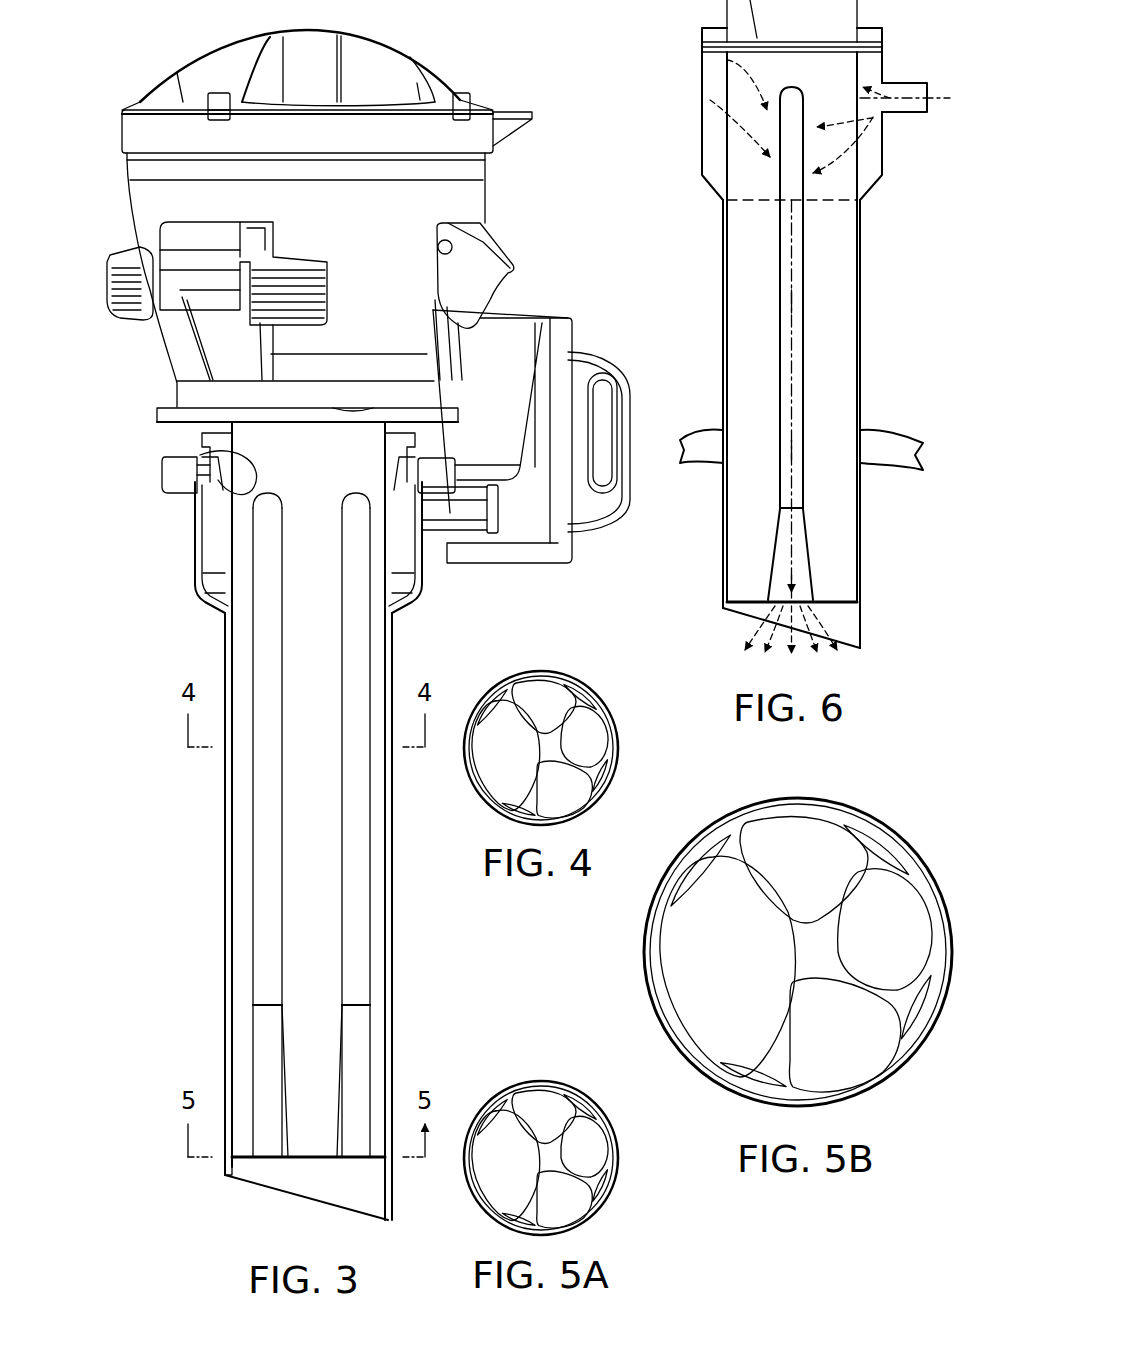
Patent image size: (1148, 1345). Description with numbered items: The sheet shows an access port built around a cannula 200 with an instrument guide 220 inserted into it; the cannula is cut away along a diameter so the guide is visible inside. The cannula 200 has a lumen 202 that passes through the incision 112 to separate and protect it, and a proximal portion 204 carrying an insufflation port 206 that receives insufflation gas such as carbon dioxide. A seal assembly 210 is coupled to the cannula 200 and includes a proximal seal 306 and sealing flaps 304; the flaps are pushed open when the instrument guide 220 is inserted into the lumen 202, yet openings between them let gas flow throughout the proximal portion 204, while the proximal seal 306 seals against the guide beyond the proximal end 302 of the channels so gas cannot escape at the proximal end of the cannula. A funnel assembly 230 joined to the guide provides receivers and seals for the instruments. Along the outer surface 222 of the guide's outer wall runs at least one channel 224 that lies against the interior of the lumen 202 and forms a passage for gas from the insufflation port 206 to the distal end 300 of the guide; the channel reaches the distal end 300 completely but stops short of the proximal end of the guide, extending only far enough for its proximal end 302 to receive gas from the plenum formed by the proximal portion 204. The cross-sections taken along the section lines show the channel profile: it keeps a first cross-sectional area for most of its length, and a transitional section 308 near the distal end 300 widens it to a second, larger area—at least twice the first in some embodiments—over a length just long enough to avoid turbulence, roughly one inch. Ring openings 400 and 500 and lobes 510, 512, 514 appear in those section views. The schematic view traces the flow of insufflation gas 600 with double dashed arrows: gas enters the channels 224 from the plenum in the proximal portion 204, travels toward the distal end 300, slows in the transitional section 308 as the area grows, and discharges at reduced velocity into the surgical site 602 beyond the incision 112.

In FIG. 6, the incision 112 is at (860, 430).
In FIG. 3, the cannula 200 is at (170, 777).
In FIG. 6, the cannula 200 is at (660, 270).
In FIG. 3, the lumen 202 is at (225, 792).
In FIG. 6, the lumen 202 is at (722, 284).
In FIG. 3, the proximal portion 204 is at (193, 548).
In FIG. 6, the proximal portion 204 is at (702, 103).
In FIG. 3, the insufflation port 206 is at (462, 531).
In FIG. 6, the insufflation port 206 is at (893, 82).
In FIG. 3, the seal assembly 210 is at (177, 502).
In FIG. 3, the instrument guide 220 is at (663, 352).
In FIG. 6, the instrument guide 220 is at (750, 395).
In FIG. 3, the outer surface 222 is at (232, 830).
In FIG. 4, the outer surface 222 is at (566, 673).
In FIG. 5A, the outer surface 222 is at (587, 1220).
In FIG. 5B, the outer surface 222 is at (867, 1090).
In FIG. 6, the outer surface 222 is at (727, 345).
In FIG. 3, the channel 224 is at (253, 883).
In FIG. 6, the channel 224 is at (803, 342).
In FIG. 3, the funnel assembly 230 is at (128, 198).
In FIG. 3, the distal end 300 is at (266, 1155).
In FIG. 6, the distal end 300 is at (783, 598).
In FIG. 3, the proximal end 302 is at (266, 505).
In FIG. 6, the proximal end 302 is at (790, 100).
In FIG. 3, the sealing flaps 304 is at (397, 568).
In FIG. 3, the proximal seal 306 is at (200, 485).
In FIG. 3, the transitional section 308 is at (250, 1070).
In FIG. 6, the transitional section 308 is at (810, 558).
In FIG. 4, the rim opening 400 is at (517, 690).
In FIG. 5B, the rim opening 400 is at (767, 818).
In FIG. 5A, the rim opening 500 is at (517, 1100).
In FIG. 5B, the rim opening 500 is at (773, 838).
In FIG. 5B, the left lobe 510 is at (670, 897).
In FIG. 5B, the top lobe 512 is at (830, 815).
In FIG. 5B, the lower lobe 514 is at (760, 887).
In FIG. 6, the flow of insufflation gas 600 is at (937, 100).
In FIG. 6, the surgical site 602 is at (865, 665).